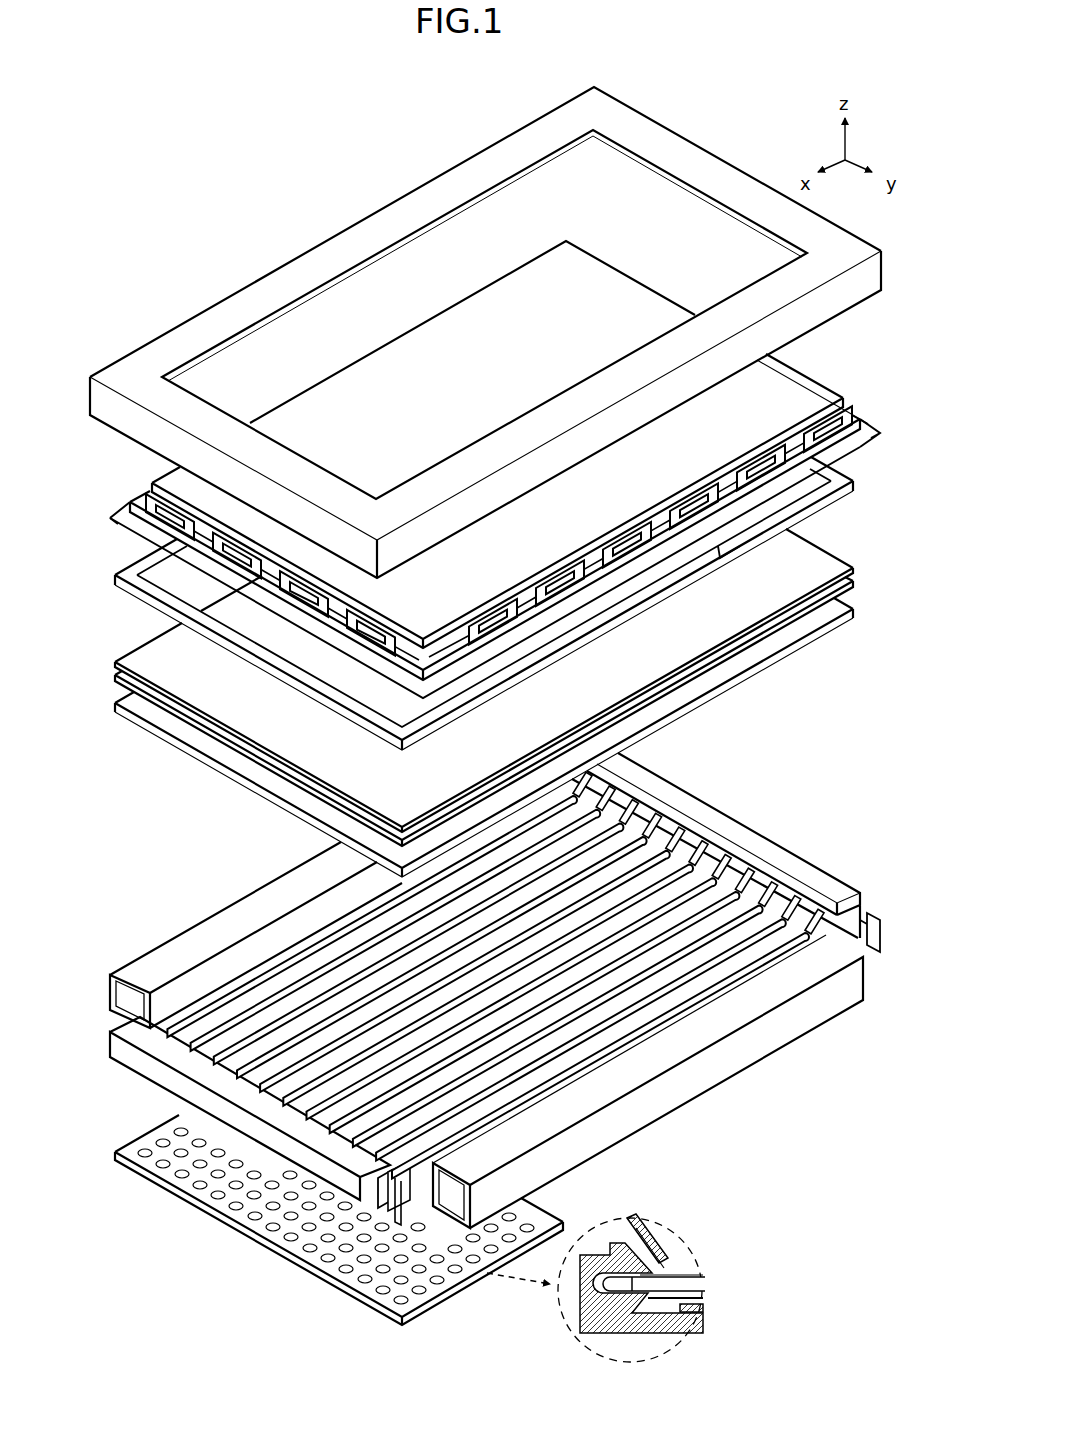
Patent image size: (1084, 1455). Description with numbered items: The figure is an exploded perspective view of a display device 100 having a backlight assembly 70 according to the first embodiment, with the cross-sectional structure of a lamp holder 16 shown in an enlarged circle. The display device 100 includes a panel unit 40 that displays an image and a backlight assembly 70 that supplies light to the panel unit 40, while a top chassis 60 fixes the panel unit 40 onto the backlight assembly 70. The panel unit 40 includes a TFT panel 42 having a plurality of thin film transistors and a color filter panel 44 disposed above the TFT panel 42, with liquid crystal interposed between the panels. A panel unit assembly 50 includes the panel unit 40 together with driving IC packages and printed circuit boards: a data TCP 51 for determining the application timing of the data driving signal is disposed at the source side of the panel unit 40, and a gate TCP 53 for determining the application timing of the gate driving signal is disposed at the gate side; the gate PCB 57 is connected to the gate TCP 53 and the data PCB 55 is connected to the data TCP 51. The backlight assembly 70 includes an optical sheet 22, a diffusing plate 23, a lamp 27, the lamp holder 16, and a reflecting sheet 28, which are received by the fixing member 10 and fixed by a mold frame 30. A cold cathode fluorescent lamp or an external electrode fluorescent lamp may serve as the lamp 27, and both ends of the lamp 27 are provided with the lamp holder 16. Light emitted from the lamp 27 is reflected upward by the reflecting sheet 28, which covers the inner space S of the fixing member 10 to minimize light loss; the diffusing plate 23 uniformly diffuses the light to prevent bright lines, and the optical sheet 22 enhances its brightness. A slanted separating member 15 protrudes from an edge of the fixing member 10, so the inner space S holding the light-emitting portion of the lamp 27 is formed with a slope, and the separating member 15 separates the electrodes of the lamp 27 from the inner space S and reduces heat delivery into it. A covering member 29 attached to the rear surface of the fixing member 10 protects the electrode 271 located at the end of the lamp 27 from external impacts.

The display device 100 is at (411, 125).
The top chassis 60 is at (737, 168).
The panel unit 40 is at (503, 295).
The color filter panel 44 is at (813, 380).
The TFT panel 42 is at (853, 410).
The panel unit assembly 50 is at (490, 534).
The gate PCB 57 is at (120, 530).
The gate TCP 53 is at (150, 537).
The data PCB 55 is at (873, 436).
The data TCP 51 is at (878, 443).
The mold frame 30 is at (860, 480).
The optical sheet 22 is at (857, 563).
The diffusing plate 23 is at (850, 613).
The backlight assembly 70 is at (912, 483).
The fixing member 10 is at (127, 963).
The separating member 15 is at (860, 942).
The lamp holder 16 is at (727, 887).
The lamp 27 is at (483, 1059).
The electrode 271 is at (660, 1270).
The reflecting sheet 28 is at (240, 1005).
The covering member 29 is at (247, 1227).
The inner space S is at (570, 893).